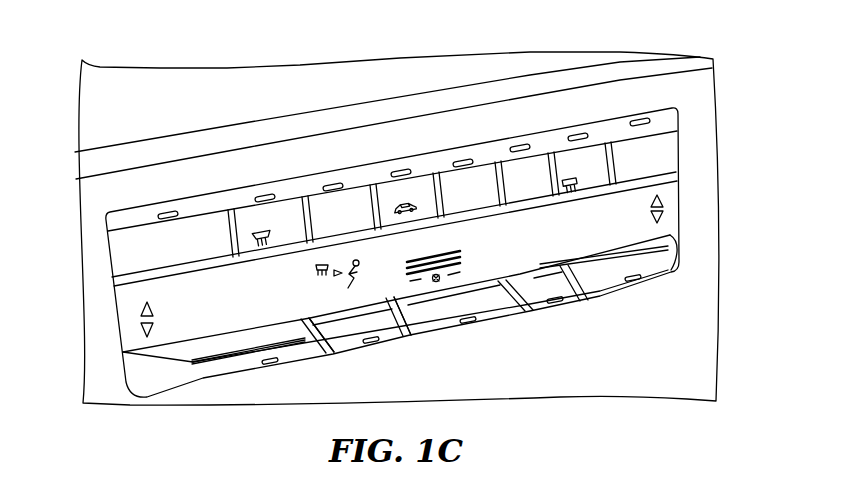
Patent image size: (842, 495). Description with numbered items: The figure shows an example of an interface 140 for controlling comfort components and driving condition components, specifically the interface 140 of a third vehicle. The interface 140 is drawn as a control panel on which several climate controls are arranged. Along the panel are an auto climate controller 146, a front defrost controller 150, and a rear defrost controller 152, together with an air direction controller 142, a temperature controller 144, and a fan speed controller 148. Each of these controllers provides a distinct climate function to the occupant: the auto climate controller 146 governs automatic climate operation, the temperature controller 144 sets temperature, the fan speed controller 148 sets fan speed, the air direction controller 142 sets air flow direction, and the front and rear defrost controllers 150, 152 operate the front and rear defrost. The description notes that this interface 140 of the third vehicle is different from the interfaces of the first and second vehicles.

The interface 140 is at (510, 68).
The auto climate controller 146 is at (131, 262).
The front defrost controller 150 is at (262, 228).
The rear defrost controller 152 is at (567, 175).
The temperature controller 144 is at (245, 342).
The air direction controller 142 is at (357, 322).
The fan speed controller 148 is at (472, 297).